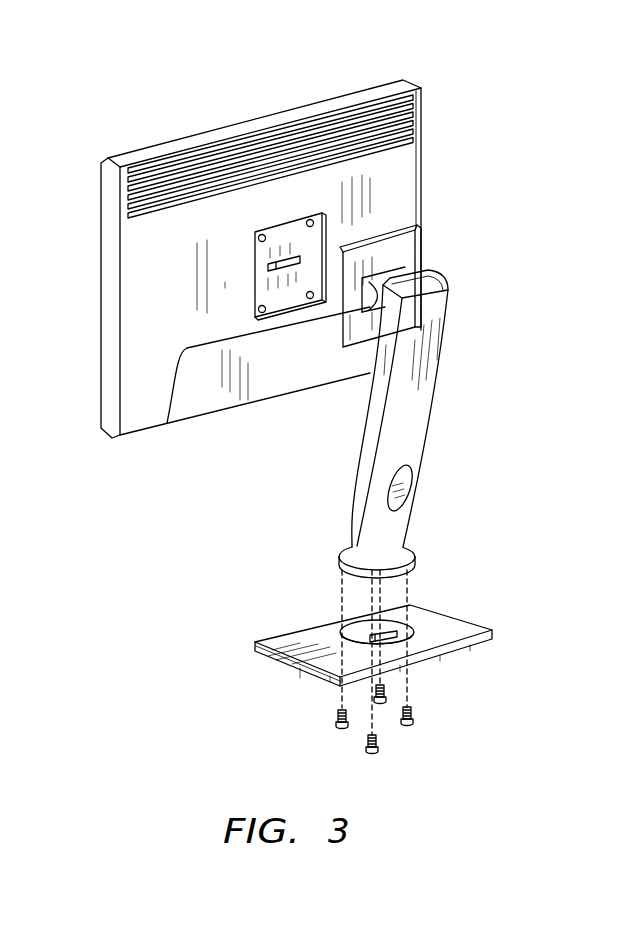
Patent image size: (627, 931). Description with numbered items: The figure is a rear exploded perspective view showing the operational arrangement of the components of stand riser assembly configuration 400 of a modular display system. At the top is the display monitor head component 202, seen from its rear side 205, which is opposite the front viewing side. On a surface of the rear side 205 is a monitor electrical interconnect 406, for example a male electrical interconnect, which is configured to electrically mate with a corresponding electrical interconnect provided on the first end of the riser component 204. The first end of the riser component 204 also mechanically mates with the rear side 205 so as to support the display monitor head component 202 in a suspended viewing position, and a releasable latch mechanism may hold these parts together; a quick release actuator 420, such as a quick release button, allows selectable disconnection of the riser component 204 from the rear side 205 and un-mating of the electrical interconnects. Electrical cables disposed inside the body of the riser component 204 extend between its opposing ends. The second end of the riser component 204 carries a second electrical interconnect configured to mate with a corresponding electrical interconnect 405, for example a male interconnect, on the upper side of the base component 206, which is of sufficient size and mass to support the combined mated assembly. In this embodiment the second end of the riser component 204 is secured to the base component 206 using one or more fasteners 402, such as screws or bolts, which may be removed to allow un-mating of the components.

The stand riser assembly configuration 400 is at (90, 99).
The display monitor head component 202 is at (424, 122).
The rear side 205 is at (410, 178).
The riser component 204 is at (438, 372).
The base component 206 is at (423, 618).
The monitor electrical interconnect 406 is at (285, 262).
The quick release actuator 420 is at (287, 302).
The electrical interconnect 405 is at (345, 632).
The fasteners 402 is at (370, 697).